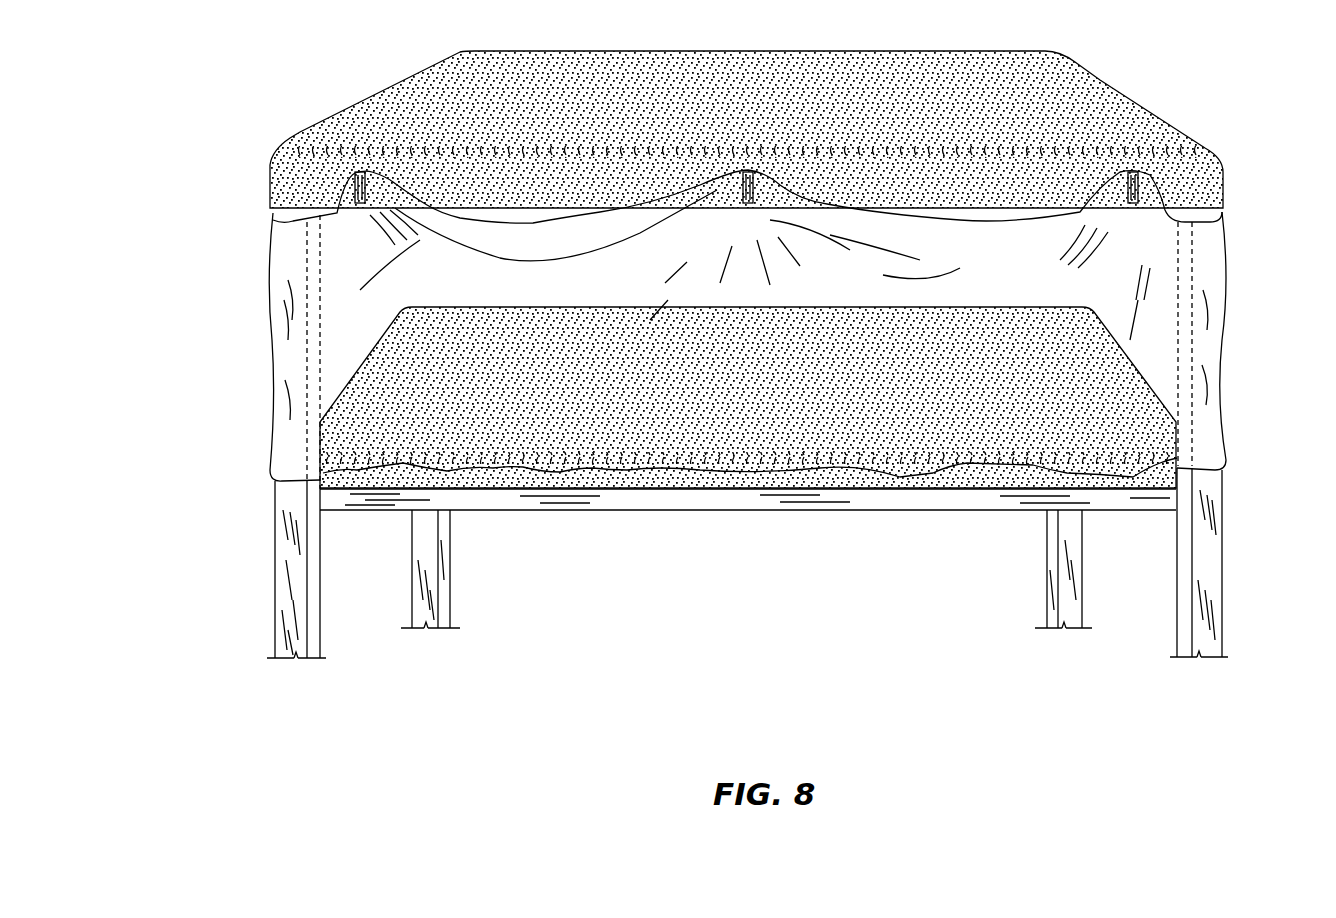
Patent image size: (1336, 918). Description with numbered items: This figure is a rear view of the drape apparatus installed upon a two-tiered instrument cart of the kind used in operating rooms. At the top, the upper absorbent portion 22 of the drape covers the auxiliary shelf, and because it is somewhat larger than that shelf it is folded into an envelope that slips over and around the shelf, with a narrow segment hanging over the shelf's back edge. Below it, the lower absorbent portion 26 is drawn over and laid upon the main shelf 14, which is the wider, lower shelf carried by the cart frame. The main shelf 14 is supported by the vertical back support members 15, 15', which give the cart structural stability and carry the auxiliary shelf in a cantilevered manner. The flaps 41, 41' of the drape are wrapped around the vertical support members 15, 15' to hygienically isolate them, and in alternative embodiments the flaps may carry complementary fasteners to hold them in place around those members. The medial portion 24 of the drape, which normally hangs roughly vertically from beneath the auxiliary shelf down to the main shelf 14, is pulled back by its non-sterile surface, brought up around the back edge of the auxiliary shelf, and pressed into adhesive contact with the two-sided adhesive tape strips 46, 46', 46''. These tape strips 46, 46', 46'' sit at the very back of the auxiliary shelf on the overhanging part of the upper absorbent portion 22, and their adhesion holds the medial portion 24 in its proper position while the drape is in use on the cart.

The upper absorbent portion 22 is at (842, 85).
The lower absorbent portion 26 is at (442, 338).
The medial portion 24 is at (852, 295).
The two-sided adhesive tape strip 46 is at (656, 112).
The two-sided adhesive tape strip 46' is at (1189, 146).
The two-sided adhesive tape strip 46'' is at (292, 144).
The flap 41 is at (1233, 341).
The flap 41' is at (260, 347).
The vertical back support member 15 is at (1229, 439).
The vertical back support member 15' is at (259, 436).
The main shelf 14 is at (850, 500).